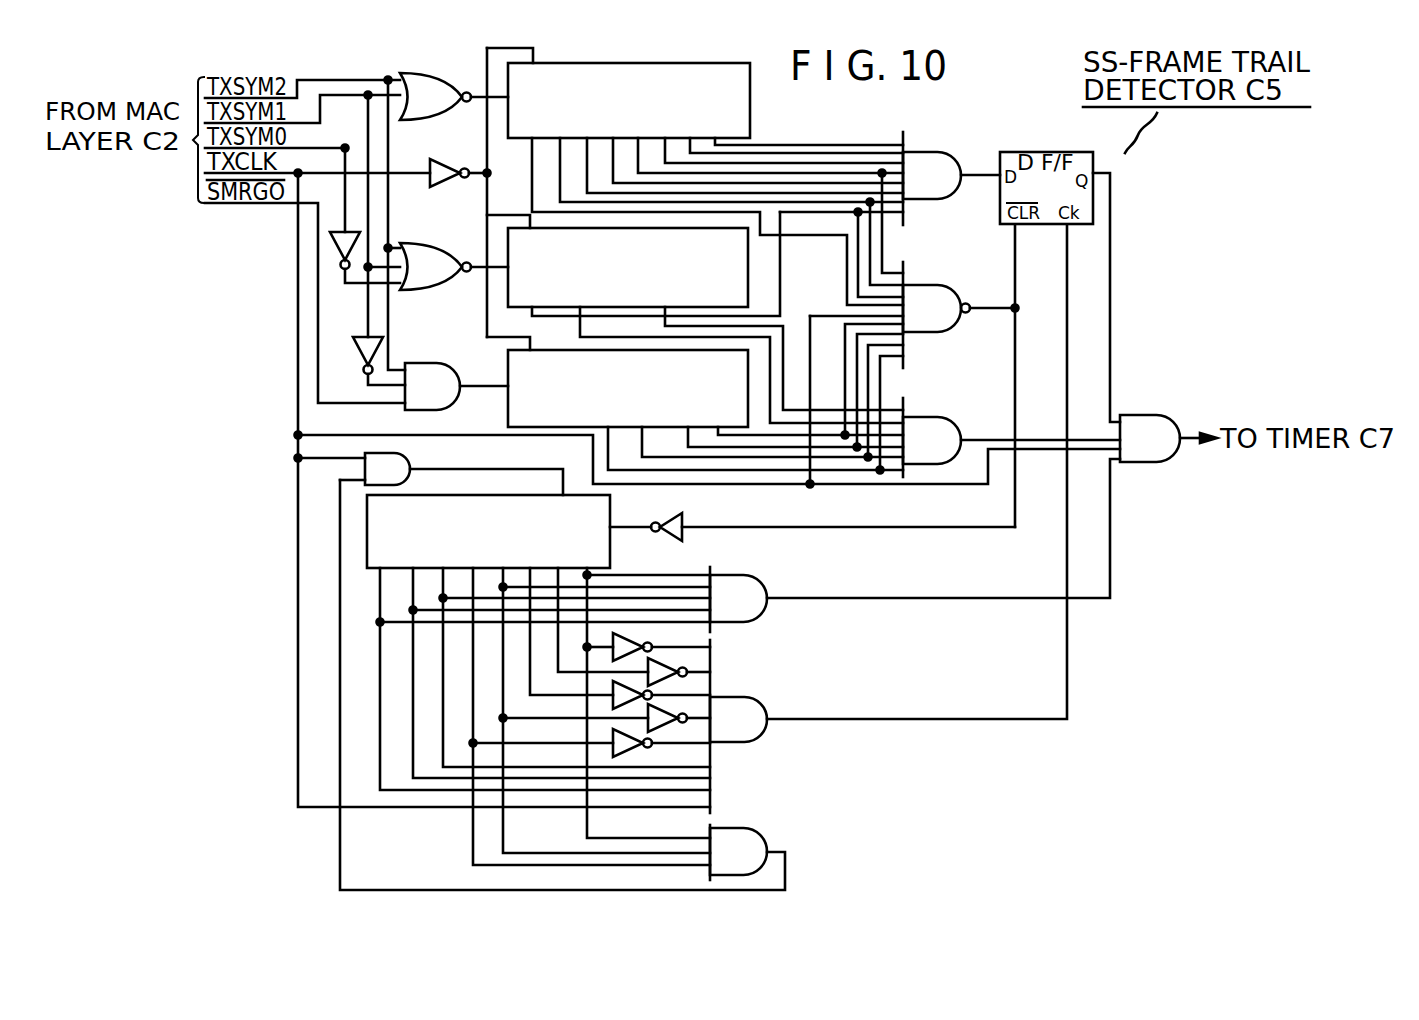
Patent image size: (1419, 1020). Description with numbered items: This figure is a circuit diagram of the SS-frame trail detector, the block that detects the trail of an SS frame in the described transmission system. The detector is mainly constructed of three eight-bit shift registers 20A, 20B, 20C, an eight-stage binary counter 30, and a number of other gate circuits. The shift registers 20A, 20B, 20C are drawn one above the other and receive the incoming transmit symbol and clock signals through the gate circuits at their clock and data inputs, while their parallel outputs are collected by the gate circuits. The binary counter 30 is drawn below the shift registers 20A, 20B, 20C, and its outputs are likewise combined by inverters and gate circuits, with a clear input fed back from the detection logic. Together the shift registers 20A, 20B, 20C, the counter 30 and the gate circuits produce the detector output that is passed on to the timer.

The 8-bit shift register 20A is at (664, 63).
The 8-bit shift register 20B is at (748, 272).
The 8-bit shift register 20C is at (508, 372).
The 8-stage binary counter 30 is at (610, 504).